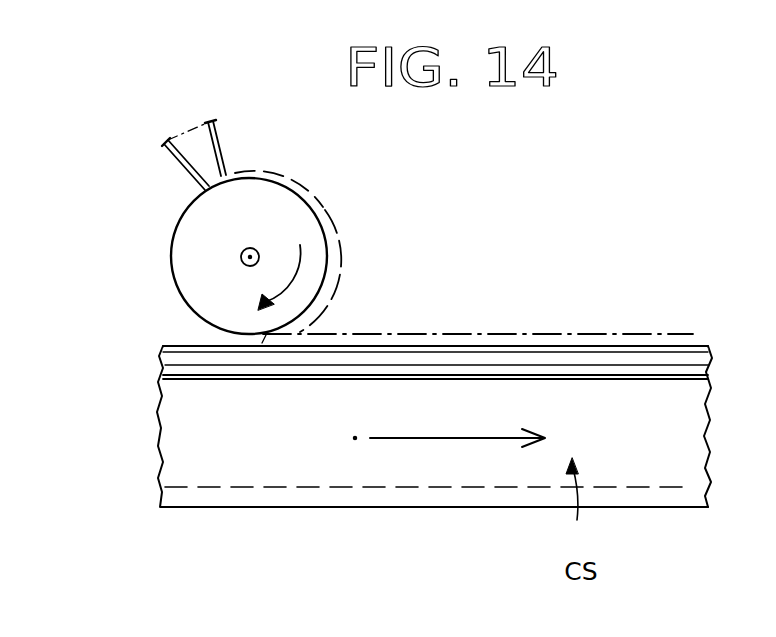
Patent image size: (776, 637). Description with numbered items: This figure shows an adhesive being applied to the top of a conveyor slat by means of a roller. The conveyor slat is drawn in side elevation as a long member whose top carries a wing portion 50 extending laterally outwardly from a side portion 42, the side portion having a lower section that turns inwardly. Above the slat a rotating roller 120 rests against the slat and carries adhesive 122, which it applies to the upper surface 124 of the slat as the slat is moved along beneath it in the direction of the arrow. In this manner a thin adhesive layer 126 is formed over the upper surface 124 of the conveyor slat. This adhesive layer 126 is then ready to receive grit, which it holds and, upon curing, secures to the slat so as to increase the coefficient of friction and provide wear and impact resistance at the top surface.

The side portion 42 is at (252, 463).
The wing portion 50 is at (224, 366).
The roller 120 is at (292, 215).
The adhesive 122 is at (203, 153).
The upper surface 124 is at (462, 347).
The adhesive layer 126 is at (602, 334).